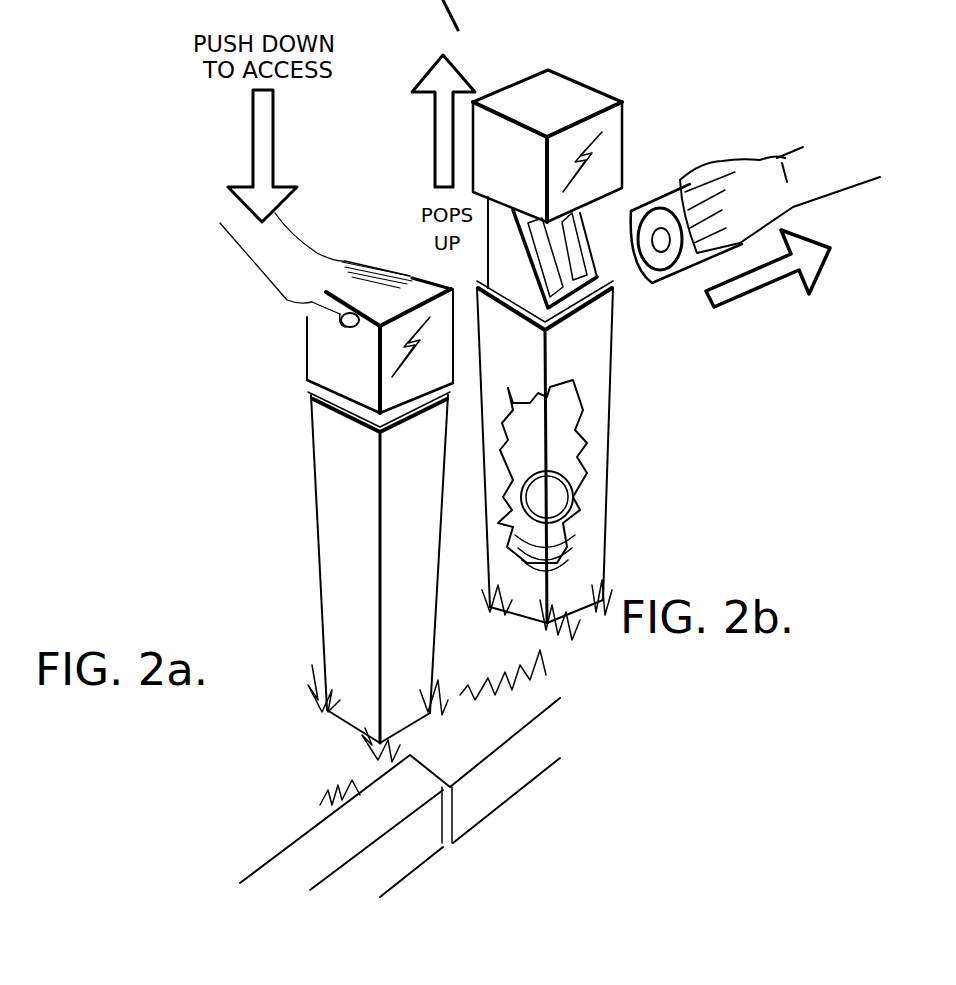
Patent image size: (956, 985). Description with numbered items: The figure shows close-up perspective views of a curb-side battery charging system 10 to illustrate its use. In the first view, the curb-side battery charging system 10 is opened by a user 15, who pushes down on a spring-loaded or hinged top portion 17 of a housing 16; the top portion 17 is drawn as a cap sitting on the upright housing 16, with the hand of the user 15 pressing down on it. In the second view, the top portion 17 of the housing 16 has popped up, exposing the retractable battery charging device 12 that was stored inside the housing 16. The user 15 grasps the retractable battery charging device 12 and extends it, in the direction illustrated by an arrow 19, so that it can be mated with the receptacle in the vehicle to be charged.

In FIG. 2a, the curb-side battery charging system 10 is at (262, 471).
In FIG. 2b, the curb-side battery charging system 10 is at (665, 457).
In FIG. 2b, the retractable battery charging device 12 is at (652, 283).
In FIG. 2a, the user 15 is at (293, 285).
In FIG. 2b, the user 15 is at (750, 163).
In FIG. 2a, the housing 16 is at (320, 612).
In FIG. 2b, the housing 16 is at (605, 542).
In FIG. 2a, the top portion 17 is at (310, 381).
In FIG. 2b, the top portion 17 is at (597, 91).
In FIG. 2b, the arrow 19 is at (773, 267).